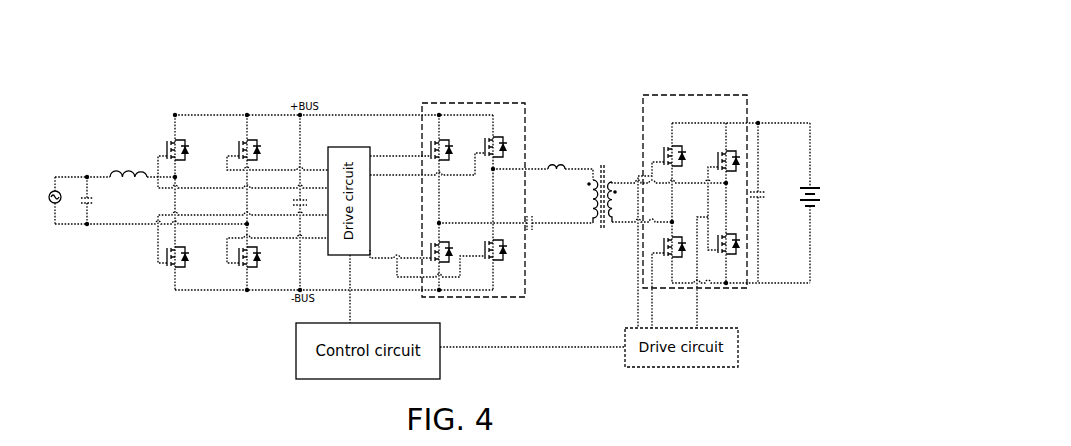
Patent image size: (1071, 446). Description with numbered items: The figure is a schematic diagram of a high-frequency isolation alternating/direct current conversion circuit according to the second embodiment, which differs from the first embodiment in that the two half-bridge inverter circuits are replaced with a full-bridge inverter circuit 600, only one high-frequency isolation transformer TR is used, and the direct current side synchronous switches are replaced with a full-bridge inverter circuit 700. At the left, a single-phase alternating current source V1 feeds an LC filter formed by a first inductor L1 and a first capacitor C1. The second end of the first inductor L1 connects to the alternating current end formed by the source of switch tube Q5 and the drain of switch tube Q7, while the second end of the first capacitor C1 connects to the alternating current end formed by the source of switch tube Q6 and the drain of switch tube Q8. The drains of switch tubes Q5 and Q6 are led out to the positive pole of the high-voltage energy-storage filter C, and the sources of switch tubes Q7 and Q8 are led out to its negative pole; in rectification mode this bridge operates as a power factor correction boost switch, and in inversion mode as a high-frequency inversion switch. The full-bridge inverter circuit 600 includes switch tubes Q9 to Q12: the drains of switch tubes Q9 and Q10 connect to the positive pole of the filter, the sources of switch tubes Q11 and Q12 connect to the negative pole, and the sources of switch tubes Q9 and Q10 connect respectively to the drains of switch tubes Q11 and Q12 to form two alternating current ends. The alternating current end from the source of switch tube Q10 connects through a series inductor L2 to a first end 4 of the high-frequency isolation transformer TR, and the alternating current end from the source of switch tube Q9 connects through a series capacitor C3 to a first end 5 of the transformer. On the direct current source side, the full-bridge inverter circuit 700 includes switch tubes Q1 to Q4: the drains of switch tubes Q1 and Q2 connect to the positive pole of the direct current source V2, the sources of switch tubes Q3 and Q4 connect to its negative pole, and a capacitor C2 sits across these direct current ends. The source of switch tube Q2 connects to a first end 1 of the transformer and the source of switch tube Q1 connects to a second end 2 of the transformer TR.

The full-bridge inverter circuit 600 is at (493, 103).
The full-bridge inverter circuit 700 is at (670, 95).
The first end of the high-frequency isolation transformer at the direct current sour 1 is at (624, 173).
The second end of the high-frequency isolation transformer at the direct current sou 2 is at (625, 210).
The first end of the high-frequency isolation transformer at the alternating current 4 is at (579, 177).
The first end of the high-frequency isolation transformer at the alternating current 5 is at (579, 213).
The single-phase alternating current source V1 is at (60, 200).
The first capacitor C1 is at (95, 200).
The first inductor L1 is at (128, 168).
The high-voltage energy-storage filter C is at (293, 202).
The switch tube Q5 is at (243, 161).
The switch tube Q6 is at (277, 152).
The switch tube Q7 is at (243, 249).
The switch tube Q8 is at (277, 260).
The switch tube Q9 is at (419, 146).
The switch tube Q10 is at (444, 149).
The switch tube Q11 is at (421, 250).
The switch tube Q12 is at (457, 251).
The inductor L2 is at (556, 159).
The capacitor C3 is at (539, 218).
The high-frequency isolation transformer TR is at (599, 190).
The switch tube Q1 is at (662, 231).
The switch tube Q2 is at (721, 193).
The switch tube Q3 is at (668, 279).
The switch tube Q4 is at (718, 272).
The capacitor C2 is at (764, 203).
The direct current source V2 is at (815, 203).